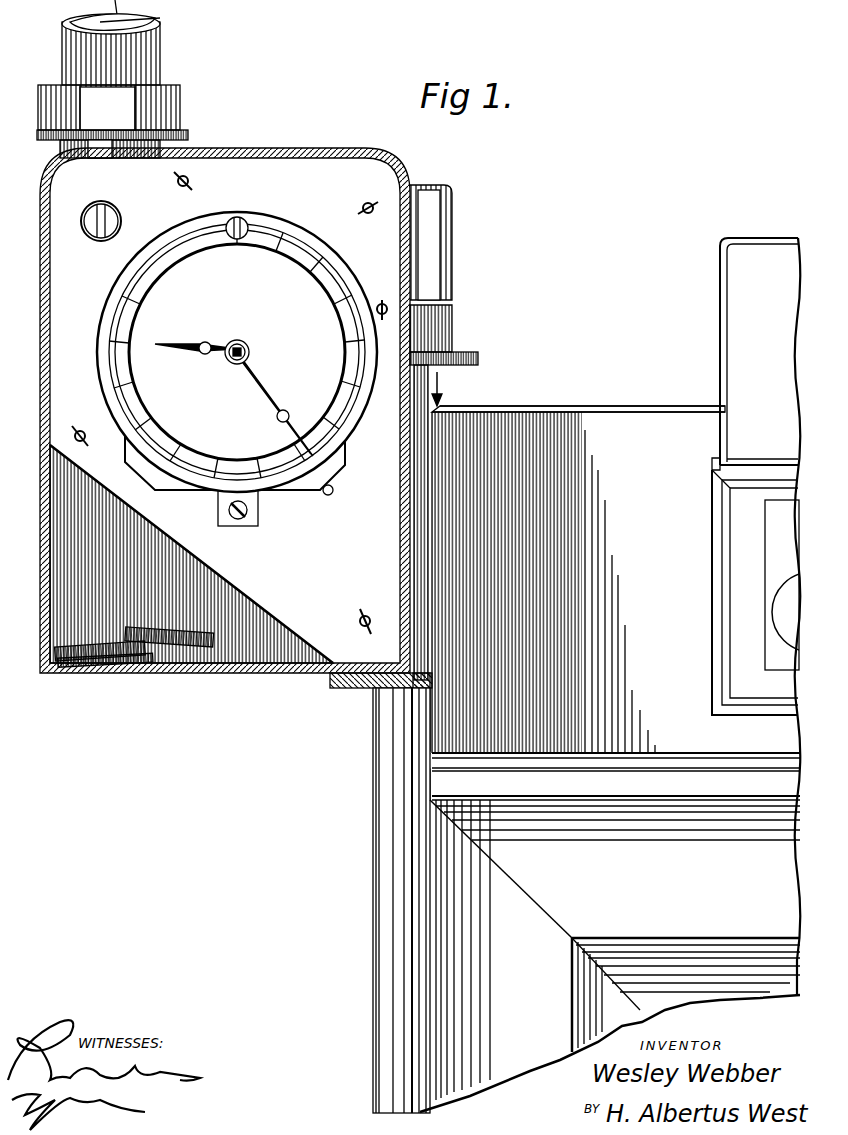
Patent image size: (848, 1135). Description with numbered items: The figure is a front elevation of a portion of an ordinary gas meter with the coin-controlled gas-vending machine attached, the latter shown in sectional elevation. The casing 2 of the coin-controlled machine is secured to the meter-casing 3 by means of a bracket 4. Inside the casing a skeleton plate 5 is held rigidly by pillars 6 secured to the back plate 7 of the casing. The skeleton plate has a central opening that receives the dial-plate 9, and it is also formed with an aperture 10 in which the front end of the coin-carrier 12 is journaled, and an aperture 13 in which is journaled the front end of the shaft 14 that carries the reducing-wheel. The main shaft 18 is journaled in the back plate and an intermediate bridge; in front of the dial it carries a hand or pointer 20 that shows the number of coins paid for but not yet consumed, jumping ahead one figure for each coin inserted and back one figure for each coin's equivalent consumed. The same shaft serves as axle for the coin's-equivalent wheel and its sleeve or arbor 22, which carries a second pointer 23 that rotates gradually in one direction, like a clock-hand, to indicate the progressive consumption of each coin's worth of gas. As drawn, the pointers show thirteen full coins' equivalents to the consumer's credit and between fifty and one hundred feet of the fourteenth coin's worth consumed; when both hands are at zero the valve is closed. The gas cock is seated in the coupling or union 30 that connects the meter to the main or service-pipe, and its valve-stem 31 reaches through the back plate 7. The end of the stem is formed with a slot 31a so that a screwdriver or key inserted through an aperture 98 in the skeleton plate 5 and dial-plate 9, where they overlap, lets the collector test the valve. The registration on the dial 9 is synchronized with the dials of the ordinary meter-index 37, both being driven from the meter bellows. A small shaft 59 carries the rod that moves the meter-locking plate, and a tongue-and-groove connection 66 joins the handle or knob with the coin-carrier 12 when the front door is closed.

The casing 2 is at (42, 448).
The meter-casing 3 is at (615, 603).
The bracket 4 is at (330, 685).
The skeleton plate 5 is at (351, 550).
The pillars 6 is at (225, 401).
The back plate 7 is at (66, 580).
The dial-plate 9 is at (234, 350).
The aperture 10 is at (118, 218).
The coin-carrier 12 is at (86, 210).
The aperture 13 is at (334, 489).
The shaft 14 is at (326, 496).
The main shaft 18 is at (248, 352).
The hand or pointer 20 is at (186, 347).
The sleeve or arbor 22 is at (236, 364).
The hand or pointer 23 is at (275, 403).
The coupling or union 30 is at (414, 188).
The valve-stem 31 is at (250, 224).
The slot 31a is at (226, 224).
The meter-index 37 is at (806, 585).
The small shaft 59 is at (383, 303).
The tongue-and-groove connection 66 is at (99, 241).
The aperture 98 is at (246, 222).